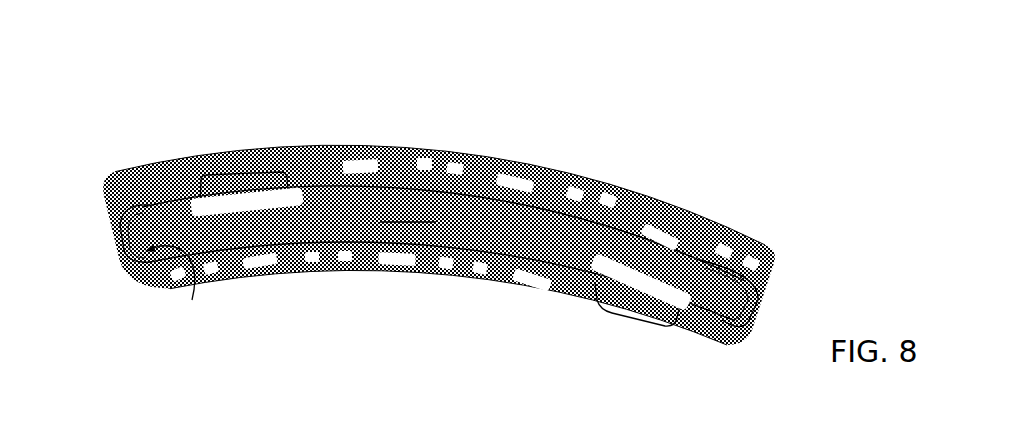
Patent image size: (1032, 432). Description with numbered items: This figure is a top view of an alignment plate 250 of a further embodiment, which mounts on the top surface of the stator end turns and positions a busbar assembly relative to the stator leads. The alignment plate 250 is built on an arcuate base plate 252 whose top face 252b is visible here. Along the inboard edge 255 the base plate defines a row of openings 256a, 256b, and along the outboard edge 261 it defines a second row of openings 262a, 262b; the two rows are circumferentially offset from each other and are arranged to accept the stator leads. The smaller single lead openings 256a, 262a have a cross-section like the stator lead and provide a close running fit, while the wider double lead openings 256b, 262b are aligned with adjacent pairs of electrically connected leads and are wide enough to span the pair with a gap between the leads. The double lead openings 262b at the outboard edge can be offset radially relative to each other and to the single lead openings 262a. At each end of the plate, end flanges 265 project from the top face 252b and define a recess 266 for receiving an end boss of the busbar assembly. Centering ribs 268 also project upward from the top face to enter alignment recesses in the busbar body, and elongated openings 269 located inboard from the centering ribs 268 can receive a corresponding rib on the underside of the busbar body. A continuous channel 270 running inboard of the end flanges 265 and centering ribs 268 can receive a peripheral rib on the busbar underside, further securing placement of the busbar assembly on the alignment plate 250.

The alignment plate 250 is at (439, 190).
The base plate 252 is at (665, 212).
The top face 252b is at (442, 260).
The inboard edge 255 is at (563, 303).
The single lead openings 256a is at (349, 262).
The double lead openings 256b is at (263, 268).
The outboard edge 261 is at (150, 166).
The single lead openings 262a is at (424, 161).
The double lead openings 262b is at (368, 163).
The end flanges 265 is at (118, 240).
The recess 266 is at (162, 300).
The centering ribs 268 is at (233, 173).
The elongated openings 269 is at (200, 206).
The continuous channel 270 is at (538, 212).